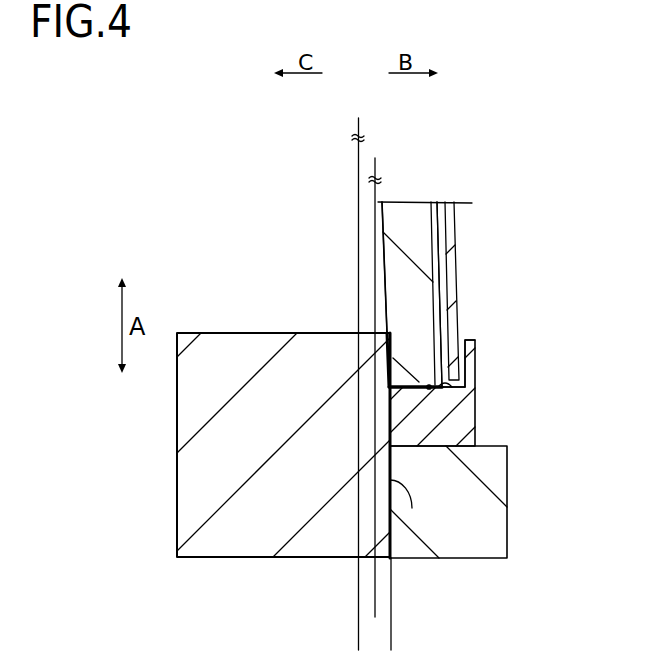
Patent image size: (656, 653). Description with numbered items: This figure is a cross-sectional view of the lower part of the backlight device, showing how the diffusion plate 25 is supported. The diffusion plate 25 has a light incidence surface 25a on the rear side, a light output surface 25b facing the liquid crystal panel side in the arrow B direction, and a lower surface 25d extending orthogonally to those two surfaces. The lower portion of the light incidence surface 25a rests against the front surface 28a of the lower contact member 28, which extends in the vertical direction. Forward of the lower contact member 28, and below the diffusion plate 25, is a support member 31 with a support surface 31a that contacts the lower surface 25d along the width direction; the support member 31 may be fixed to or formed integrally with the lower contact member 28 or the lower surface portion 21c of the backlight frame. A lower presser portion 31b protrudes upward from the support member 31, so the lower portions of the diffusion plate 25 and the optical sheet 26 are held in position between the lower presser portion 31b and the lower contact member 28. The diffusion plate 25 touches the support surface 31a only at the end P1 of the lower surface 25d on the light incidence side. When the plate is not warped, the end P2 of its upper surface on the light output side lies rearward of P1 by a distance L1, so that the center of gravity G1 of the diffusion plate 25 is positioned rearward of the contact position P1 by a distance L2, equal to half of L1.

The diffusion plate 25 is at (408, 212).
The light incidence surface 25a is at (385, 282).
The light output surface 25b is at (439, 268).
The lower surface 25d is at (422, 385).
The optical sheet 26 is at (445, 213).
The lower contact member 28 is at (259, 533).
The front surface 28a is at (412, 508).
The support member 31 is at (470, 425).
The support surface 31a is at (468, 398).
The lower presser portion 31b is at (477, 358).
The lower surface portion 21c is at (500, 513).
The end of the lower surface P1 is at (428, 385).
The end of the upper surface P2 is at (358, 118).
The center of gravity G1 is at (375, 157).
The distance L1 is at (391, 647).
The distance L2 is at (364, 615).